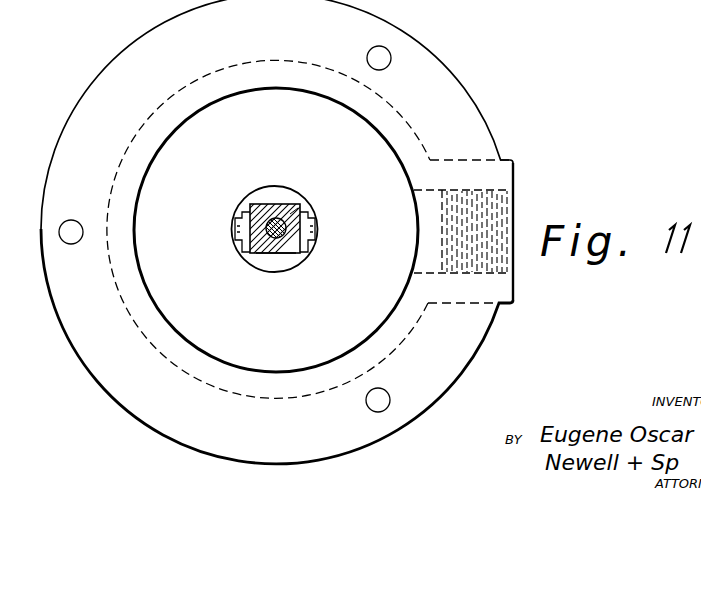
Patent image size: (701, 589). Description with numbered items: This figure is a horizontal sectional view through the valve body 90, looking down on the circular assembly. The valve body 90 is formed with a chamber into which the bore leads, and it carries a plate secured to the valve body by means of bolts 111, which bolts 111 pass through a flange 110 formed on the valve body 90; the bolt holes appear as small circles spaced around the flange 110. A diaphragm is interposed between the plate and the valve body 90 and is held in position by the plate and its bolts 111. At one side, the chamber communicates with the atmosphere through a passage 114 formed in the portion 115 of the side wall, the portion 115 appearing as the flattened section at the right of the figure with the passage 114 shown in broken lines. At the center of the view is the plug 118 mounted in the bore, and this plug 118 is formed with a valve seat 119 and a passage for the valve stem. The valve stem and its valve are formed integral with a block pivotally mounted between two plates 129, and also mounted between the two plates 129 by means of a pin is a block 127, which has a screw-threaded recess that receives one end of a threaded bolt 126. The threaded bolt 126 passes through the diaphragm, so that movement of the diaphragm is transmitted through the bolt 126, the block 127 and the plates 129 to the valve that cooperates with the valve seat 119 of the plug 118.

The flange 110 is at (127, 65).
The bolts 111 is at (60, 230).
The valve body 90 is at (276, 230).
The plug 118 is at (242, 252).
The threaded bolt 126 is at (268, 256).
The block 127 is at (295, 208).
The valve seat 119 is at (277, 257).
The plates 129 is at (247, 213).
The portion of the side wall 115 is at (514, 176).
The passage 114 is at (503, 212).